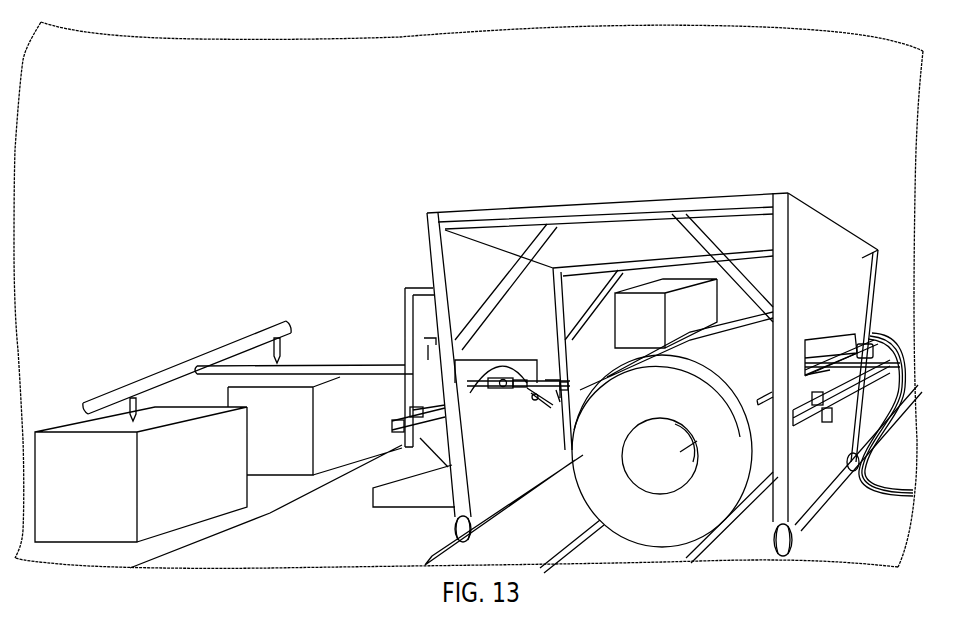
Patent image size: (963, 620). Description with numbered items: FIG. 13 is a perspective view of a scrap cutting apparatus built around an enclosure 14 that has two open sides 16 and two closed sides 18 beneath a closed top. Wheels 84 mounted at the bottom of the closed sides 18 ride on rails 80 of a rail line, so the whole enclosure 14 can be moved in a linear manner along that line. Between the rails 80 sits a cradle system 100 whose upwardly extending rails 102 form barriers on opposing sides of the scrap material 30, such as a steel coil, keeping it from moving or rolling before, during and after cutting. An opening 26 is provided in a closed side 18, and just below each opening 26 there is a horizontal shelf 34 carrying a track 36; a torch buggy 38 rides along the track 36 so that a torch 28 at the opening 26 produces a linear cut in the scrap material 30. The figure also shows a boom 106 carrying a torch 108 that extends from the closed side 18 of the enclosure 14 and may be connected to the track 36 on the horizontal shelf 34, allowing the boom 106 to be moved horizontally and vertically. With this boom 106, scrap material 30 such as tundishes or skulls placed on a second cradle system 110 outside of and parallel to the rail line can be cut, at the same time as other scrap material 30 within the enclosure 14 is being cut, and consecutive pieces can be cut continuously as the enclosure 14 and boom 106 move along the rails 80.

The enclosure 14 is at (890, 247).
The open sides 16 is at (446, 357).
The closed sides 18 is at (863, 253).
The opening 26 is at (470, 383).
The torch 28 is at (552, 398).
The scrap material 30 is at (272, 468).
The horizontal shelf 34 is at (408, 433).
The track 36 is at (412, 411).
The torch buggy 38 is at (860, 350).
The rails 80 is at (525, 500).
The wheels 84 is at (452, 534).
The cradle system 100 is at (650, 552).
The rails of the cradle system 102 is at (573, 548).
The boom 106 is at (305, 371).
The torch 108 is at (132, 396).
The second cradle system 110 is at (345, 467).